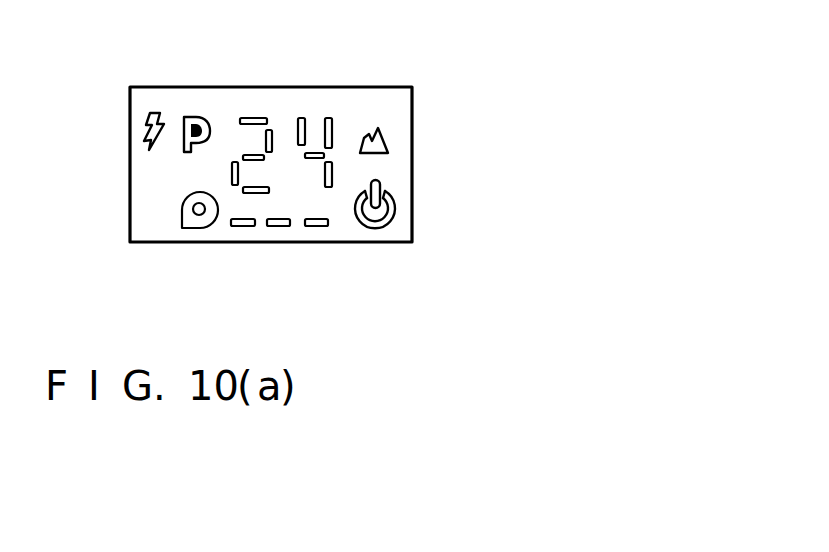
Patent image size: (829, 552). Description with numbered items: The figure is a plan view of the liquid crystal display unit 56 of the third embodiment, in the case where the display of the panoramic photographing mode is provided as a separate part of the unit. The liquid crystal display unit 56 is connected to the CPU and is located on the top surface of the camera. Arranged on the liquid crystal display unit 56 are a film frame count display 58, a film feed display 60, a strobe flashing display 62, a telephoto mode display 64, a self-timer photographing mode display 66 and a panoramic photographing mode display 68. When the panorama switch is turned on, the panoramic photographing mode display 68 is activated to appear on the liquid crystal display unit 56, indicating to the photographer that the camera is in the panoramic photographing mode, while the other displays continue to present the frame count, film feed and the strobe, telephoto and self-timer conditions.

The liquid crystal display unit 56 is at (414, 157).
The film frame count display 58 is at (273, 122).
The film feed display 60 is at (246, 227).
The strobe flashing display 62 is at (150, 115).
The telephoto mode display 64 is at (376, 129).
The self-timer photographing mode display 66 is at (374, 228).
The panoramic photographing mode display 68 is at (196, 117).